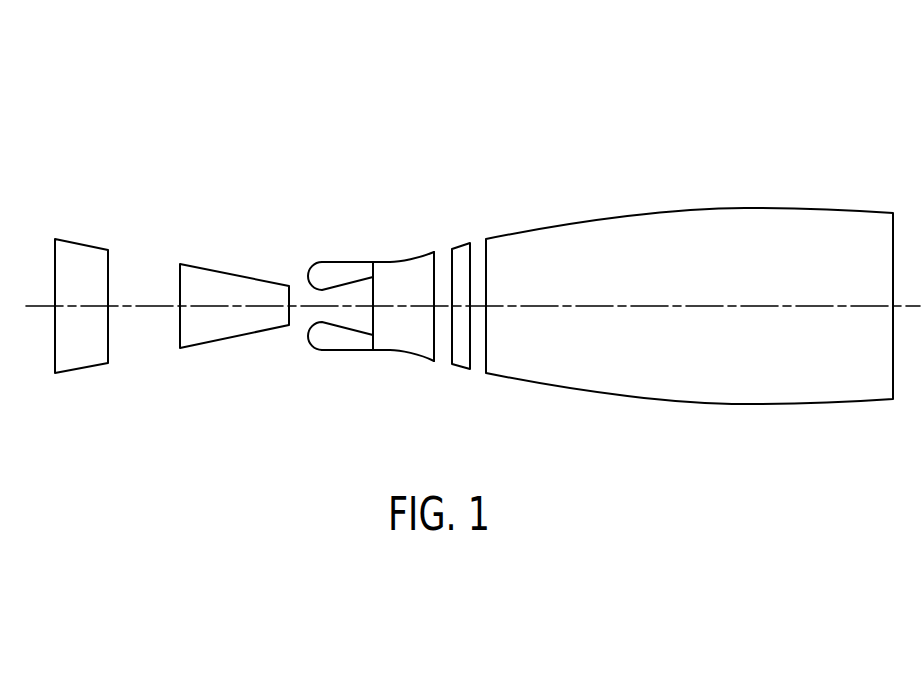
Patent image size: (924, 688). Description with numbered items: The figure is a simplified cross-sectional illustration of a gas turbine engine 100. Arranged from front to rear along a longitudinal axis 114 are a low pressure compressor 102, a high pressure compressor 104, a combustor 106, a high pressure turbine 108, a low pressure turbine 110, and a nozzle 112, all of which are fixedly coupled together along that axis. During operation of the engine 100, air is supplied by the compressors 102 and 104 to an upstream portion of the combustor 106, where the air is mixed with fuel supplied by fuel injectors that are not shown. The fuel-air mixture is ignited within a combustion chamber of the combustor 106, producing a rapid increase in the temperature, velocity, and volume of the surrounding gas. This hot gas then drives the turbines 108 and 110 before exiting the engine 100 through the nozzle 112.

The gas turbine engine 100 is at (448, 76).
The low pressure compressor 102 is at (82, 244).
The high pressure compressor 104 is at (213, 270).
The combustor 106 is at (332, 261).
The high pressure turbine 108 is at (405, 353).
The low pressure turbine 110 is at (457, 366).
The nozzle 112 is at (555, 226).
The longitudinal axis 114 is at (763, 305).